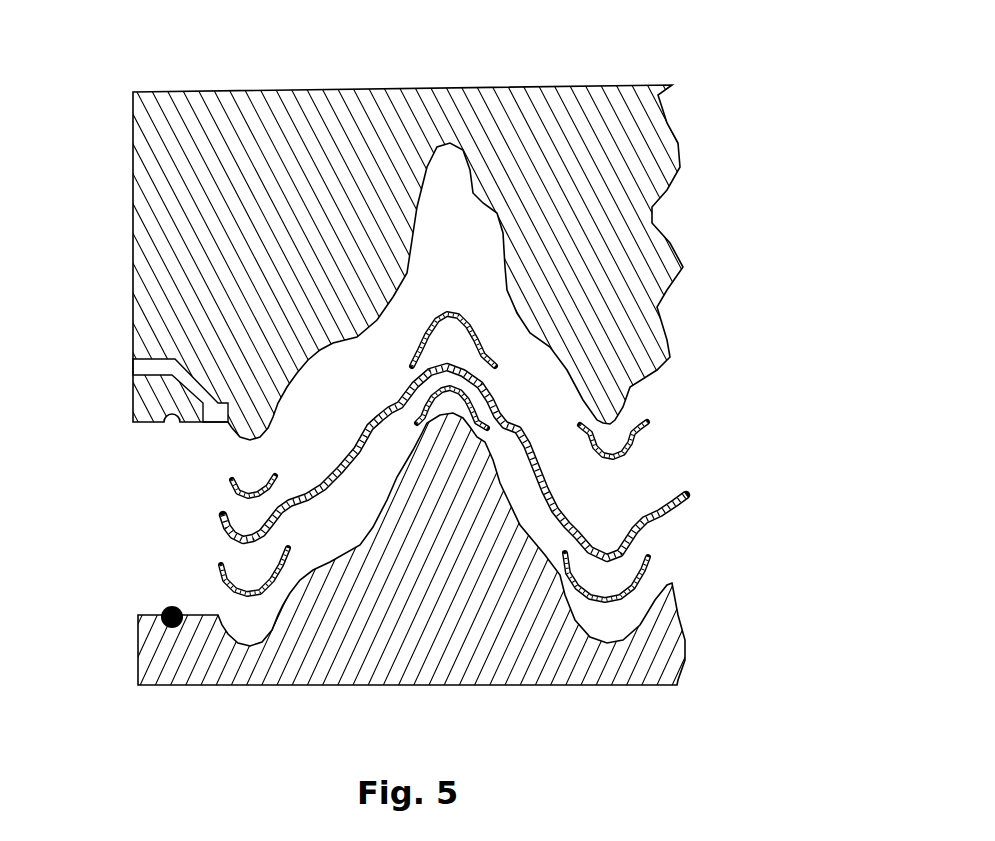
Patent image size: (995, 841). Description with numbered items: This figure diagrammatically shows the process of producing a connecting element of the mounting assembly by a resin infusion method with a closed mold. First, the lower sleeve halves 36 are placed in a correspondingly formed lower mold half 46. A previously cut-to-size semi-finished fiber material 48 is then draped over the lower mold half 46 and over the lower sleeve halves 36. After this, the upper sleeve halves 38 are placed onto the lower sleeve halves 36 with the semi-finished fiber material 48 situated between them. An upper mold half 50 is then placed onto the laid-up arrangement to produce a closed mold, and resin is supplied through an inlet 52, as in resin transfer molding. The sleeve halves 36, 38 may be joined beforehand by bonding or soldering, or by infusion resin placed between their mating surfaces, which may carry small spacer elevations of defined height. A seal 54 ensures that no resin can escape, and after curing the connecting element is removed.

The upper mold half 50 is at (433, 228).
The inlet 52 is at (145, 368).
The lower mold half 46 is at (520, 645).
The semi-finished fiber material 48 is at (558, 507).
The upper sleeve halves 38 is at (275, 474).
The lower sleeve halves 36 is at (220, 566).
The seal 54 is at (168, 610).